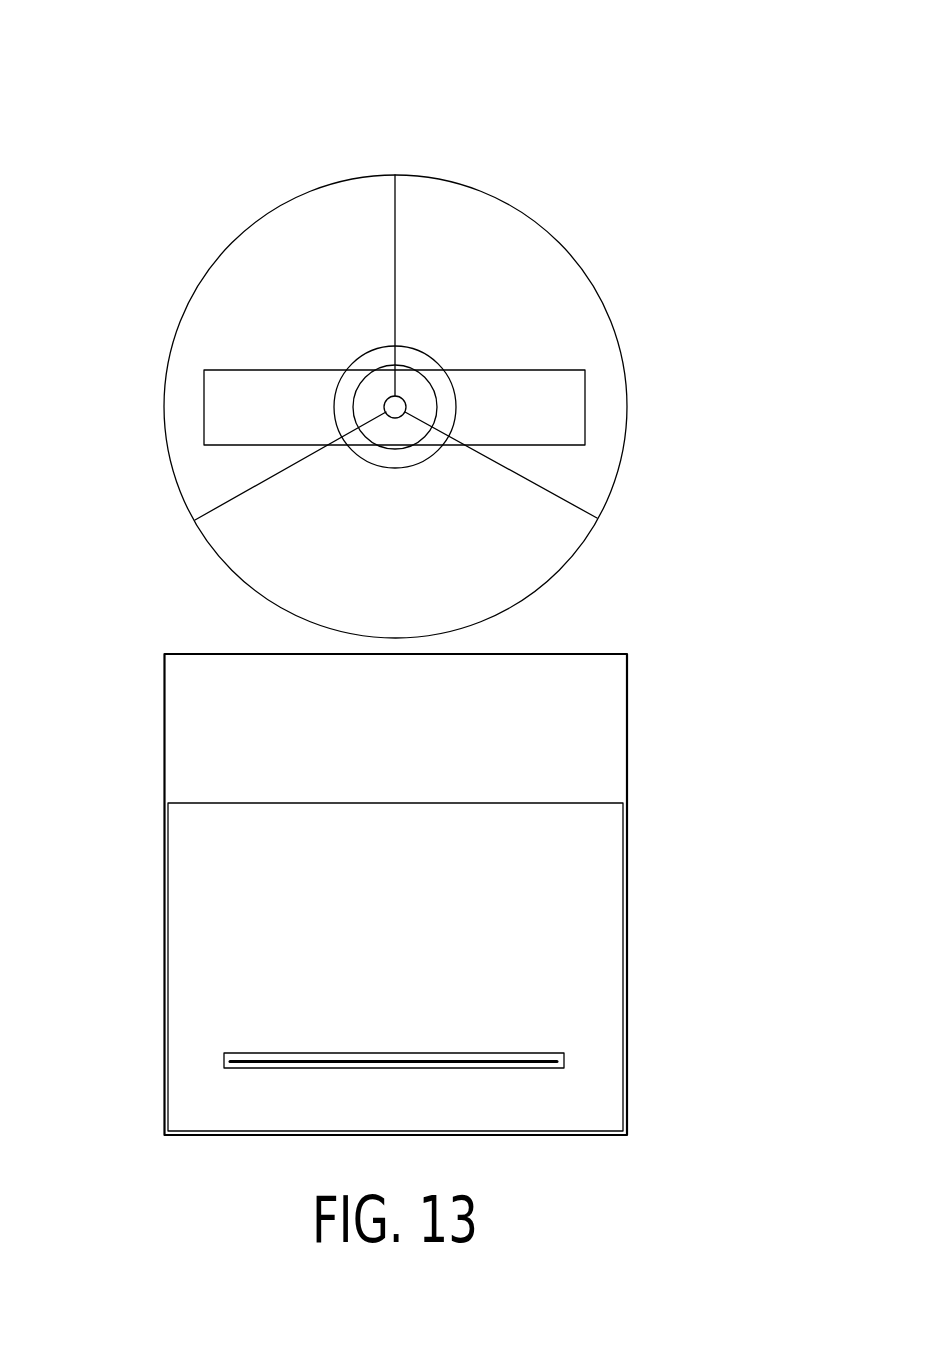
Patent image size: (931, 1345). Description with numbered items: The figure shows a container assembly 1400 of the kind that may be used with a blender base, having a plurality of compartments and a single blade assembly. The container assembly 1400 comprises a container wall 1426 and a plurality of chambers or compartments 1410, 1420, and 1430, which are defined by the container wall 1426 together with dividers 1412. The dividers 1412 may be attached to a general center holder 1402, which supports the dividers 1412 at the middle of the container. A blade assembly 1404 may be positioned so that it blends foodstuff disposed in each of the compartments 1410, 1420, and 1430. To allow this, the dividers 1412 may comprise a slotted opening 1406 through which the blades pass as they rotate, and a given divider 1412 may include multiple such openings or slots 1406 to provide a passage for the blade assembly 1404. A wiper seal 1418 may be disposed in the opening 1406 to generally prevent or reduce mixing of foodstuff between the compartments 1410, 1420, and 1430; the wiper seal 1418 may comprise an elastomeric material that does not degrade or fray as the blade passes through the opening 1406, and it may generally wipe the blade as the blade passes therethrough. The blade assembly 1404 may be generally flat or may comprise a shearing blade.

The container assembly 1400 is at (658, 86).
The center holder 1402 is at (407, 406).
The blade assembly 1404 is at (203, 420).
The slotted opening 1406 is at (565, 1055).
The compartment 1410 is at (230, 538).
The divider 1412 is at (395, 310).
The wiper seal 1418 is at (483, 1053).
The compartment 1420 is at (282, 242).
The container wall 1426 is at (575, 558).
The compartment 1430 is at (533, 273).